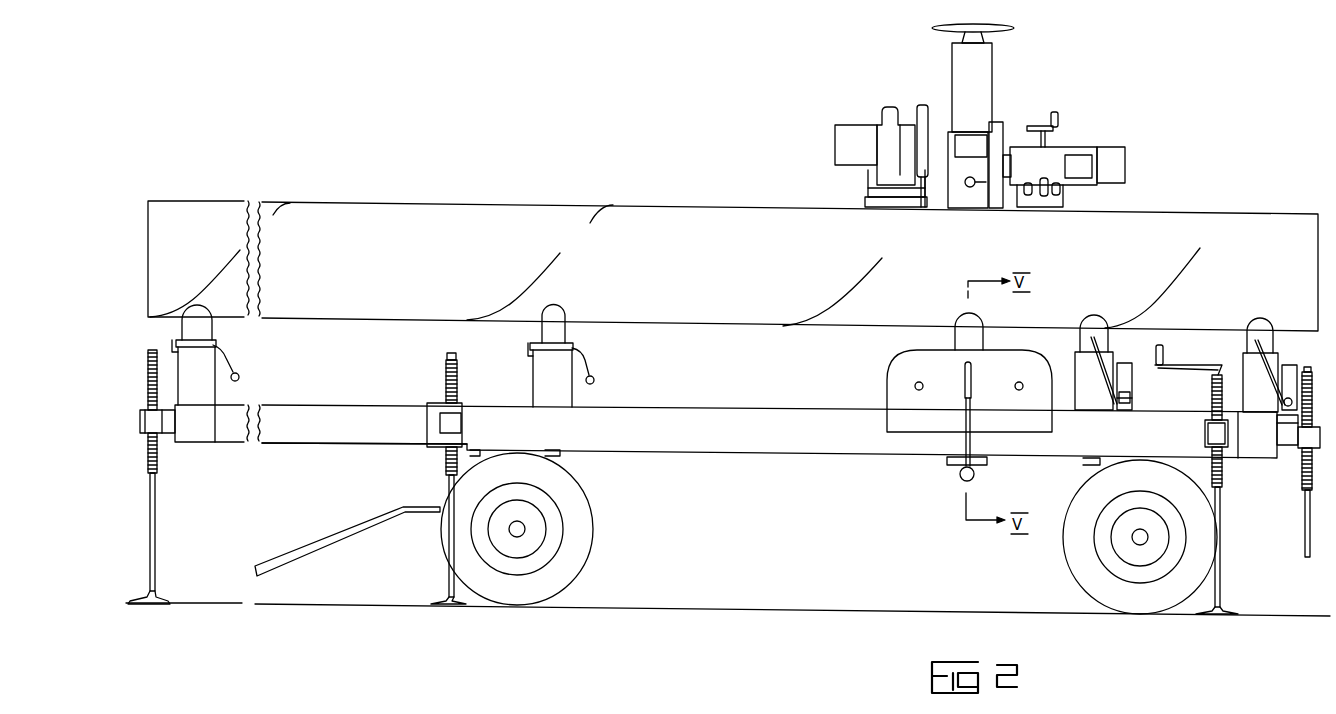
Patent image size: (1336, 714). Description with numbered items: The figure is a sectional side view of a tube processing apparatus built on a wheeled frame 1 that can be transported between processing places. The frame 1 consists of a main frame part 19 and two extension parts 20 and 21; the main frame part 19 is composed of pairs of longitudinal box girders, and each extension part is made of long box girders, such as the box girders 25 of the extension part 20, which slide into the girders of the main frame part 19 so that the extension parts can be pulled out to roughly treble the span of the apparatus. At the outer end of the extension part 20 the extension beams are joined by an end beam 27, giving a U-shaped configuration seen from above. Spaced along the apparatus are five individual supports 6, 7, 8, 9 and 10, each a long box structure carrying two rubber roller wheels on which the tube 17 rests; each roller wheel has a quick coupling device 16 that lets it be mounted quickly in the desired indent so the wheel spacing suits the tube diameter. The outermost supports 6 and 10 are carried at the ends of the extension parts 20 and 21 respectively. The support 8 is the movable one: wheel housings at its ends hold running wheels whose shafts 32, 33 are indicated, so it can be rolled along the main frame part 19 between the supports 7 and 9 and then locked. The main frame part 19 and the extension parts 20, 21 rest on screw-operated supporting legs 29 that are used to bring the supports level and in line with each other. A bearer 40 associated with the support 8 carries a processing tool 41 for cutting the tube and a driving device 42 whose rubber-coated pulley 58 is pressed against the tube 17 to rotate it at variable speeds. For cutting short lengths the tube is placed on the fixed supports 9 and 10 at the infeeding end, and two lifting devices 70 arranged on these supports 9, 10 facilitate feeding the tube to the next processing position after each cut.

The frame 1 is at (792, 482).
The support 6 is at (218, 356).
The support 7 is at (545, 372).
The support 8 is at (944, 342).
The support 9 is at (1093, 404).
The support 10 is at (1255, 365).
The quick coupling device 16 is at (591, 362).
The tube 17 is at (684, 230).
The main frame part 19 is at (782, 404).
The extension part 20 is at (300, 404).
The extension part 21 is at (1259, 462).
The box girder 25 is at (337, 430).
The end beam 27 is at (190, 434).
The supporting leg 29 is at (1222, 578).
The shaft 32 is at (920, 390).
The shaft 33 is at (1020, 390).
The bearer 40 is at (996, 63).
The processing tool 41 is at (904, 103).
The driving device 42 is at (1040, 115).
The pulley 58 is at (998, 122).
The lifting device 70 is at (1133, 377).